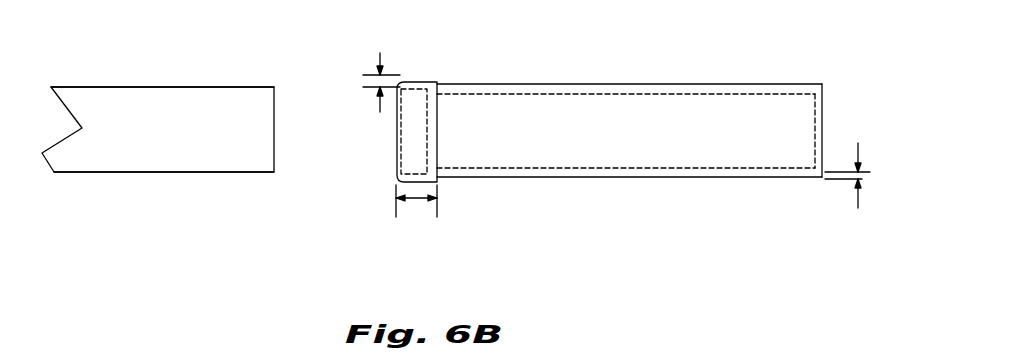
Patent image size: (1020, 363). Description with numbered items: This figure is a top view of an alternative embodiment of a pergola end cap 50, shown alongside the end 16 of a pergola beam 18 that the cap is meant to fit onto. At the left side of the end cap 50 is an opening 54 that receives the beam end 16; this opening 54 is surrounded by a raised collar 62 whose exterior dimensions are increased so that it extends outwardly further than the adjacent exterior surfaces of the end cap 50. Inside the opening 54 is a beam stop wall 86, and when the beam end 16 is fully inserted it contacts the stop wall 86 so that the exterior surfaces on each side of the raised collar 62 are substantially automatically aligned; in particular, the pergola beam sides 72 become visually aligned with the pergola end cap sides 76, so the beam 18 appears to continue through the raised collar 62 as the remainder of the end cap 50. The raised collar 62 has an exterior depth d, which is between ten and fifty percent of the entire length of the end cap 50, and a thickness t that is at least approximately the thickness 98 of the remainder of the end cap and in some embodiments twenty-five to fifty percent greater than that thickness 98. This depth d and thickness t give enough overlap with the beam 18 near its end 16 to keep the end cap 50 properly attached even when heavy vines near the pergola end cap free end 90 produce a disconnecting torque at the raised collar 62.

The end of pergola beam 16 is at (181, 143).
The pergola beam 18 is at (178, 156).
The pergola beam sides 72 is at (127, 87).
The opening 54 is at (424, 142).
The raised collar 62 is at (417, 82).
The beam stop wall 86 is at (428, 116).
The pergola end cap 50 is at (663, 134).
The pergola end cap sides 76 is at (555, 84).
The pergola end cap free end 90 is at (840, 116).
The thickness of the remainder of the pergola end cap 98 is at (862, 179).
The thickness of the raised collar t is at (364, 82).
The exterior depth of the raised collar d is at (417, 201).